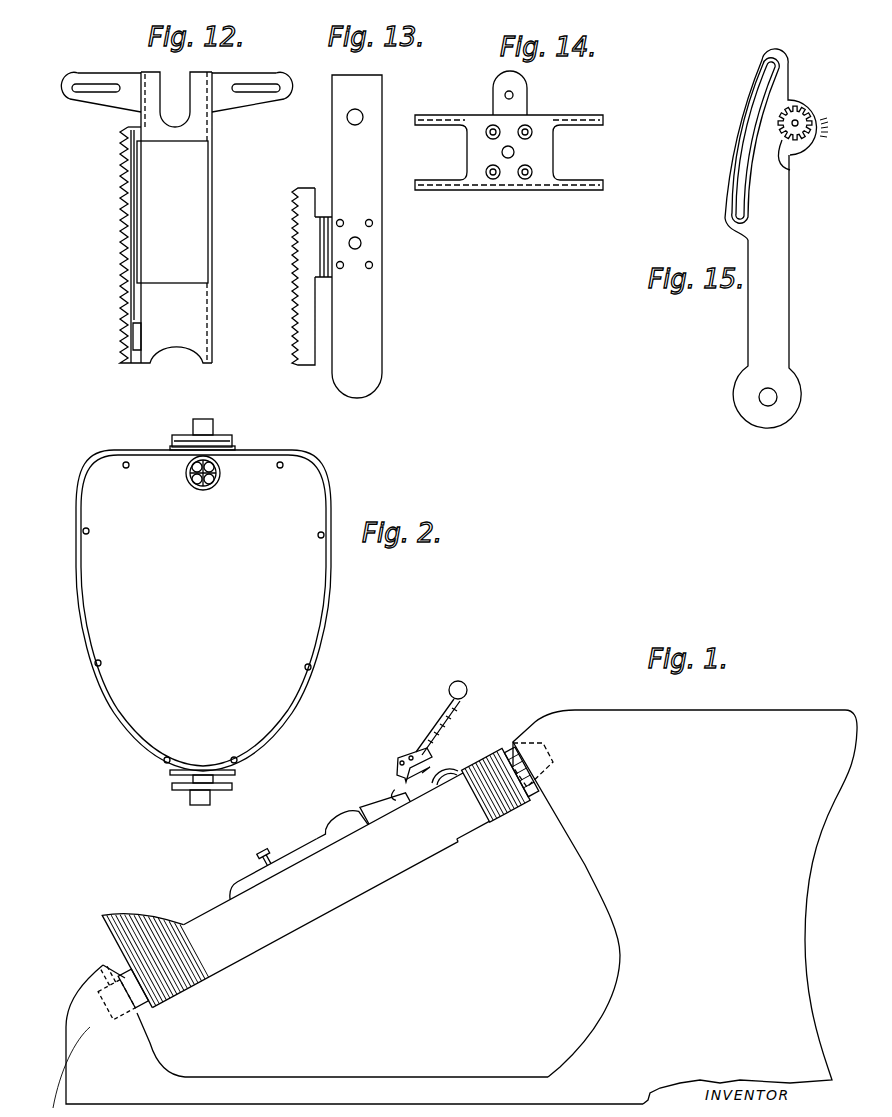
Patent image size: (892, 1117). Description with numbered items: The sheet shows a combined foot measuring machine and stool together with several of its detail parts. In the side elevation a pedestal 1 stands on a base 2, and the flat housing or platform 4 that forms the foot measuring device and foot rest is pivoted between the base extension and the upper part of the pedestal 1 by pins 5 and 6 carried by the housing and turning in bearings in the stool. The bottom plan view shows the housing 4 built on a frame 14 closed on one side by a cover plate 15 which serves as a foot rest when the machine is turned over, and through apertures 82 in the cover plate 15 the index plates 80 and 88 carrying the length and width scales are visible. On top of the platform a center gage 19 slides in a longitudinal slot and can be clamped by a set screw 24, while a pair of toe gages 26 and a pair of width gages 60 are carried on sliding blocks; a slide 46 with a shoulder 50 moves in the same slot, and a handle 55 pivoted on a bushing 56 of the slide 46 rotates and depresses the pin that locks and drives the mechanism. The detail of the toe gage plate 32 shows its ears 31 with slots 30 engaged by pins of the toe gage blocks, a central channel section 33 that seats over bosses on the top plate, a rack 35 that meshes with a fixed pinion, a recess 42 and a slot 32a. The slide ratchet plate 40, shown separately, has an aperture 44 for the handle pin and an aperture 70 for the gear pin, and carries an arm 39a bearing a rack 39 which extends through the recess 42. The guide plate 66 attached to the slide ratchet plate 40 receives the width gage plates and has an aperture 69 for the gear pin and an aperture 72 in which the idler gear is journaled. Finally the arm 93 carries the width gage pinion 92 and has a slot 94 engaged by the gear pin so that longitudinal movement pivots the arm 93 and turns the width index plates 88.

In FIG. 1, the pedestal 1 is at (805, 851).
In FIG. 1, the base 2 is at (327, 1090).
In FIG. 1, the housing or platform 4 is at (296, 870).
In FIG. 2, the pin 5 is at (212, 781).
In FIG. 1, the pin 5 is at (137, 1000).
In FIG. 2, the pin 6 is at (216, 436).
In FIG. 1, the pin 6 is at (513, 742).
In FIG. 2, the frame 14 is at (320, 668).
In FIG. 2, the cover plate 15 is at (312, 604).
In FIG. 1, the center gage 19 is at (273, 869).
In FIG. 1, the set screw 24 is at (266, 858).
In FIG. 1, the toe gages 26 is at (485, 792).
In FIG. 12, the slots 30 is at (98, 86).
In FIG. 12, the ears 31 is at (118, 100).
In FIG. 12, the toe gage plate 32 is at (207, 82).
In FIG. 12, the slot 32a is at (180, 86).
In FIG. 12, the central channel section 33 is at (208, 212).
In FIG. 12, the rack 35 is at (120, 248).
In FIG. 13, the rack 39 is at (300, 256).
In FIG. 13, the arm 39a is at (322, 262).
In FIG. 13, the slide ratchet plate 40 is at (370, 298).
In FIG. 12, the recess 42 is at (143, 268).
In FIG. 13, the aperture 44 is at (347, 117).
In FIG. 1, the slide 46 is at (385, 804).
In FIG. 1, the shoulder 50 is at (394, 796).
In FIG. 1, the handle 55 is at (443, 703).
In FIG. 1, the bushing 56 is at (422, 760).
In FIG. 1, the width gages 60 is at (340, 827).
In FIG. 14, the guide plate 66 is at (540, 154).
In FIG. 14, the aperture 69 is at (502, 152).
In FIG. 13, the aperture 70 is at (361, 243).
In FIG. 14, the aperture 72 is at (505, 95).
In FIG. 2, the index plates 80 is at (186, 474).
In FIG. 2, the apertures 82 is at (218, 468).
In FIG. 2, the index plates 88 is at (196, 482).
In FIG. 15, the pinion 92 is at (791, 167).
In FIG. 15, the arm 93 is at (775, 258).
In FIG. 15, the slot 94 is at (738, 185).